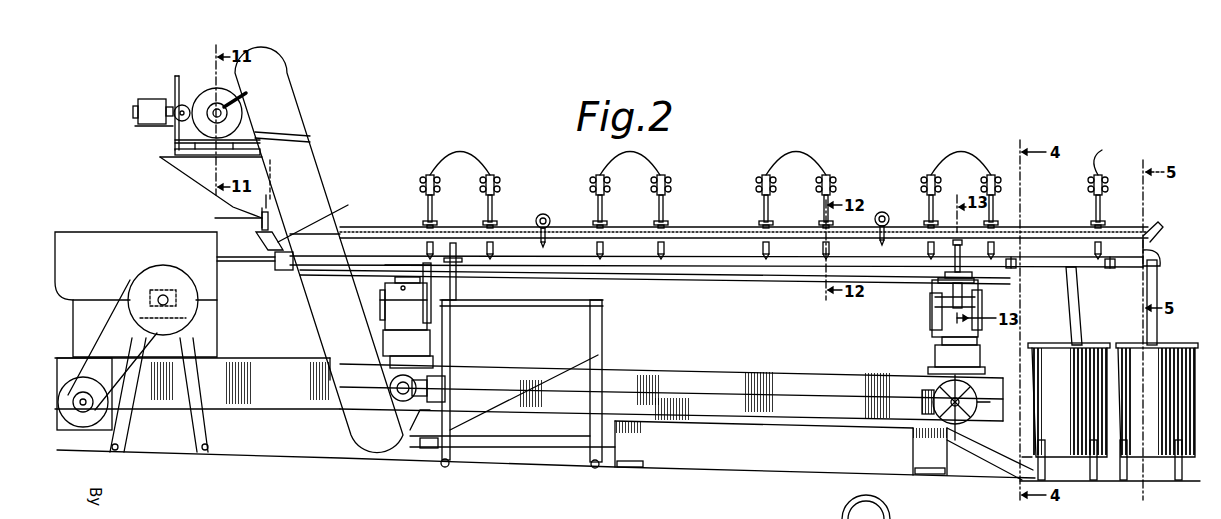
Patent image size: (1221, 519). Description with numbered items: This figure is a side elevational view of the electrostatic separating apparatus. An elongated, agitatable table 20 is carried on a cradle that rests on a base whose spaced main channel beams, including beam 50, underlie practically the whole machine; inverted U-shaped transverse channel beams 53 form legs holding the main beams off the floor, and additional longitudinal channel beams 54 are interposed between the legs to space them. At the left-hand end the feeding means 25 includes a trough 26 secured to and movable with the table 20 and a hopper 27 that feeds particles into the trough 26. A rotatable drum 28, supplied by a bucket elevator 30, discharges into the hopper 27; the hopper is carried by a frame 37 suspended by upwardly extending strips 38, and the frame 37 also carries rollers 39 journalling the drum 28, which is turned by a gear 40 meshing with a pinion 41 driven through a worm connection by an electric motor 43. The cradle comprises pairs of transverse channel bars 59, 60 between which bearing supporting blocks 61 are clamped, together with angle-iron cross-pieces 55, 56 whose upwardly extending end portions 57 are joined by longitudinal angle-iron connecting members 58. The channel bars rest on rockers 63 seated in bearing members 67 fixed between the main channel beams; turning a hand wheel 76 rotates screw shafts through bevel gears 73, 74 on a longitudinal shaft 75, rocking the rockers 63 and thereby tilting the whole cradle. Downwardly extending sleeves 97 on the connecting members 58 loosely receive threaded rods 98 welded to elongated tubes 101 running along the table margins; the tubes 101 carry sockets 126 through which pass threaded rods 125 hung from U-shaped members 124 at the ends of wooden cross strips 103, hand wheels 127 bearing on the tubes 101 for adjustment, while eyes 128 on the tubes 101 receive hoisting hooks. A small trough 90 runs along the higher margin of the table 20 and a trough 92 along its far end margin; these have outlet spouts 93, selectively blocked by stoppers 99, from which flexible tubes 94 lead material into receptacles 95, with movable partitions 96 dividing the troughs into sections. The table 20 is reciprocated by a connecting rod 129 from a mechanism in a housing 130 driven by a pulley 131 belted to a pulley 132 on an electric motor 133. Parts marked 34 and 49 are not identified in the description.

The table 20 is at (283, 272).
The feeding means 25 is at (188, 198).
The trough 26 is at (258, 238).
The hopper 27 is at (178, 176).
The rotatable drum 28 is at (200, 92).
The bucket elevator 30 is at (304, 148).
The bolt 34 is at (260, 224).
The frame 37 is at (175, 152).
The upwardly extending strips 38 is at (174, 90).
The rollers 39 is at (175, 141).
The gear 40 is at (214, 87).
The pinion 41 is at (175, 110).
The electric motor 43 is at (136, 108).
The table frame 49 is at (604, 320).
The main channel beam 50 is at (266, 414).
The transversely arranged channel beams 53 is at (335, 437).
The additional channel beams 54 is at (828, 470).
The angle-iron cross-piece 55 is at (462, 303).
The angle-iron cross-piece 56 is at (930, 333).
The upwardly extending end portions 57 is at (426, 272).
The longitudinally extending angle-iron connecting members 58 is at (768, 284).
The channel bar 59 is at (383, 322).
The channel bar 60 is at (932, 334).
The bearing supporting blocks 61 is at (425, 338).
The rocker 63 is at (418, 348).
The bearing members 67 is at (928, 368).
The bevel gears 73 is at (390, 383).
The bevel gears 74 is at (408, 412).
The longitudinally extending shaft 75 is at (706, 395).
The hand wheel 76 is at (968, 418).
The trough 90 is at (1110, 240).
The trough 92 is at (1152, 250).
The outlet spouts 93 is at (1157, 262).
The flexible tubes 94 is at (1071, 318).
The receptacles 95 is at (1147, 447).
The movable partitions 96 is at (323, 220).
The sleeves 97 is at (468, 291).
The threaded rod 98 is at (961, 248).
The stoppers 99 is at (1009, 268).
The elongated metal tube 101 is at (1040, 228).
The cross strips 103 is at (378, 160).
The U-shaped member 124 is at (426, 188).
The threaded rod 125 is at (490, 200).
The socket 126 is at (494, 247).
The hand wheel 127 is at (422, 221).
The eyes 128 is at (548, 212).
The connecting rod 129 is at (248, 264).
The housing 130 is at (82, 242).
The pulley 131 is at (158, 278).
The pulley 132 is at (83, 412).
The electric motor 133 is at (80, 355).